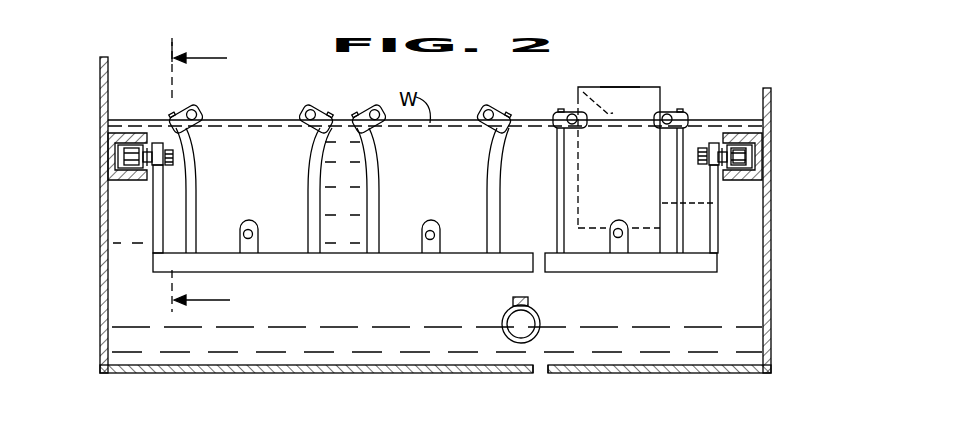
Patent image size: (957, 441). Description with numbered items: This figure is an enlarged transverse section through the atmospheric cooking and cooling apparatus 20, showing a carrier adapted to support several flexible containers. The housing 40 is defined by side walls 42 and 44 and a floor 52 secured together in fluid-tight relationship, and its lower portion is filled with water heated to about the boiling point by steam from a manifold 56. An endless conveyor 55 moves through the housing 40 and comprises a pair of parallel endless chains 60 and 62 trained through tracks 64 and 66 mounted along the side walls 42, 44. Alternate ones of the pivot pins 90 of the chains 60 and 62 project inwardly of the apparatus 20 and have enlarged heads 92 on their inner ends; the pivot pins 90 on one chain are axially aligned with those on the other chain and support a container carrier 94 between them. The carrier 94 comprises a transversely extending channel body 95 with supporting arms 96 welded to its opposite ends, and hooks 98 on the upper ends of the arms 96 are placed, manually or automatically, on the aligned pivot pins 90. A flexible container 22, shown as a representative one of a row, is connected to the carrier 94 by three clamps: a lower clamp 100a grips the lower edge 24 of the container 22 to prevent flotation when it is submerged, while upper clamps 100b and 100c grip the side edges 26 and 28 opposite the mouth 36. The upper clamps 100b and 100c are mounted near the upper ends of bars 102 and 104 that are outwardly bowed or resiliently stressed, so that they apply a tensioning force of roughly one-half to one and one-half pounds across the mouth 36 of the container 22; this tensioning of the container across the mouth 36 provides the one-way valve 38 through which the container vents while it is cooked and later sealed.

The atmospheric cooking and cooling apparatus 20 is at (722, 53).
The flexible container 22 is at (634, 86).
The lower edge 24 is at (586, 228).
The side edge 26 is at (578, 188).
The side edge 28 is at (716, 203).
The mouth 36 is at (600, 86).
The one-way valve 38 is at (578, 94).
The housing 40 is at (156, 381).
The side wall 42 is at (100, 241).
The side wall 44 is at (772, 234).
The floor 52 is at (573, 376).
The endless conveyor 55 is at (760, 142).
The manifold 56 is at (503, 318).
The endless chain 60 is at (118, 156).
The endless chain 62 is at (755, 158).
The track 64 is at (110, 139).
The track 66 is at (763, 178).
The pivot pin 90 is at (157, 172).
The enlarged head 92 is at (175, 157).
The container carrier 94 is at (330, 276).
The channel body 95 is at (536, 266).
The supporting arm 96 is at (157, 248).
The hook 98 is at (157, 143).
The clamp 100a is at (243, 233).
The clamp 100b is at (195, 107).
The clamp 100c is at (303, 114).
The bar 102 is at (193, 177).
The bar 104 is at (311, 190).